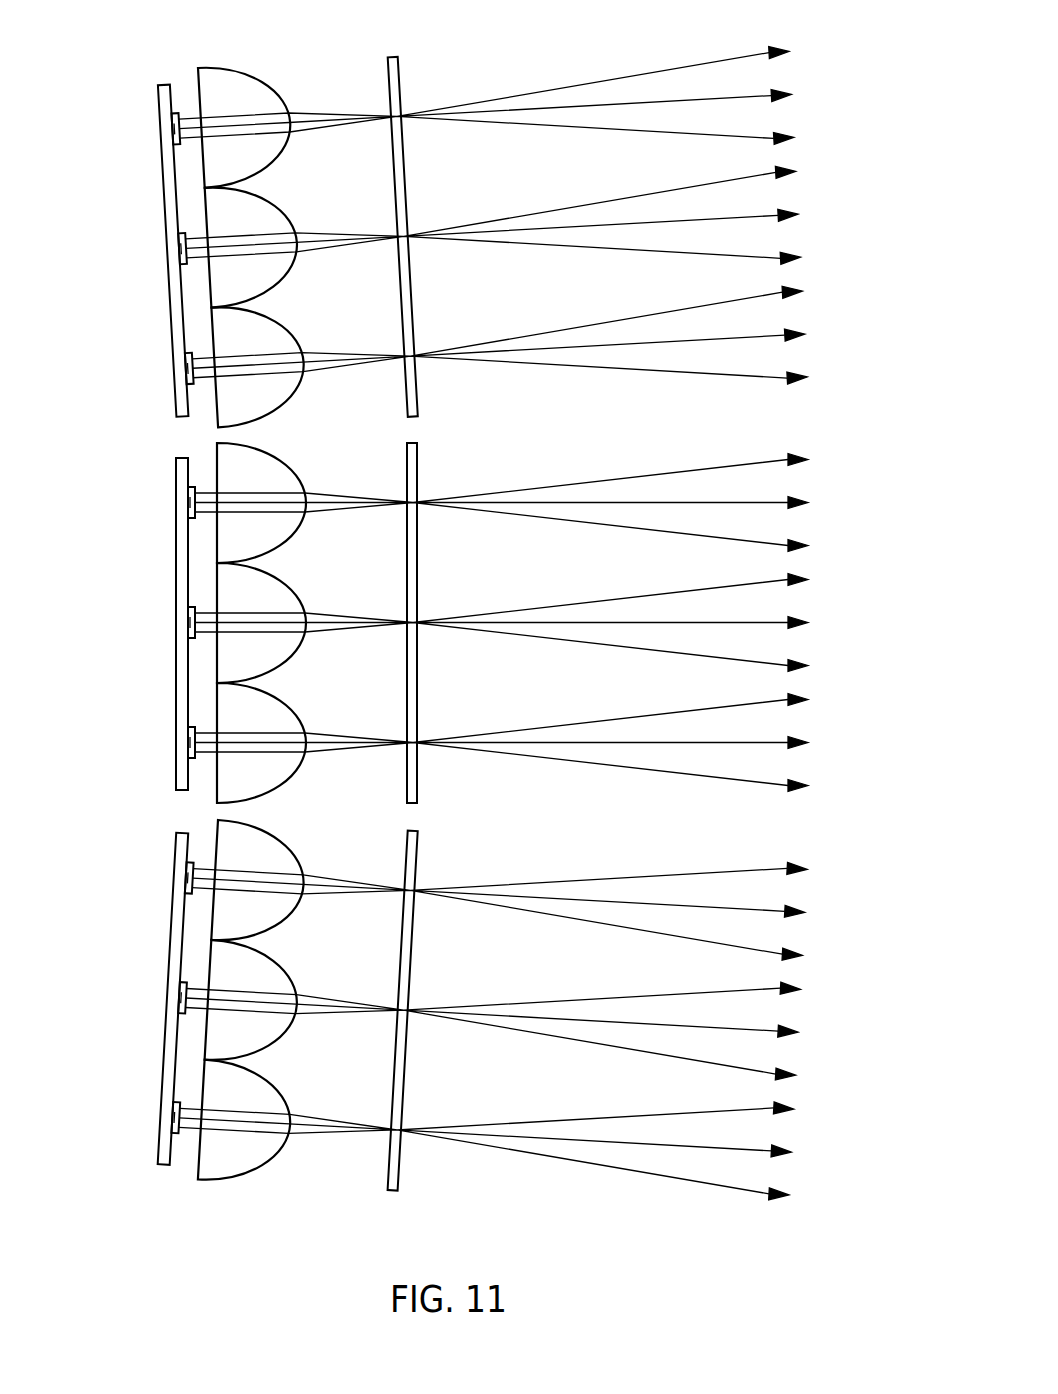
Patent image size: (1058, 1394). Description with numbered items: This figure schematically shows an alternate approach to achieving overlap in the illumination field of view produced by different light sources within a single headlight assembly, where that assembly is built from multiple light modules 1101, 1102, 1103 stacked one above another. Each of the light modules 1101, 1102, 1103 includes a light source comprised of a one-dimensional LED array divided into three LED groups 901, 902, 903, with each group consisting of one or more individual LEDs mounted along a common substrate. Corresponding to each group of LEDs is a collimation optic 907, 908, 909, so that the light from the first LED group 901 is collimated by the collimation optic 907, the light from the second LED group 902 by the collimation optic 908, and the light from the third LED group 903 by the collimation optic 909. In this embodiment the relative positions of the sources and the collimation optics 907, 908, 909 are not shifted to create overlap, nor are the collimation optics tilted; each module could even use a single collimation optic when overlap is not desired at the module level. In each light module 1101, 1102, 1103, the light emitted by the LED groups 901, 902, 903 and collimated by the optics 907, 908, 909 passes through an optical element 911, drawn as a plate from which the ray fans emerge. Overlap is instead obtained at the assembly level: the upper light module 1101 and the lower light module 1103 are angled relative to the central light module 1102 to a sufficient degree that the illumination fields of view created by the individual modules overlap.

The LED group 901 is at (176, 118).
The LED group 902 is at (183, 248).
The LED group 903 is at (180, 400).
The collimation optic 907 is at (253, 88).
The collimation optic 908 is at (280, 228).
The collimation optic 909 is at (297, 485).
The optical element 911 is at (394, 57).
The light module 1101 is at (493, 44).
The light module 1102 is at (512, 434).
The light module 1103 is at (512, 837).